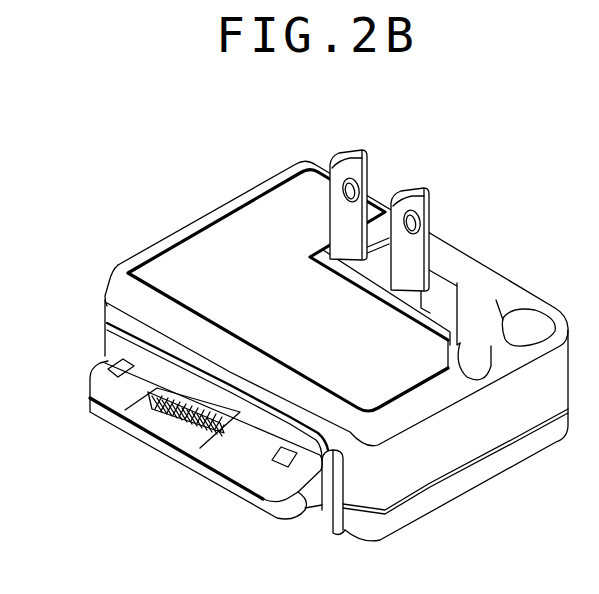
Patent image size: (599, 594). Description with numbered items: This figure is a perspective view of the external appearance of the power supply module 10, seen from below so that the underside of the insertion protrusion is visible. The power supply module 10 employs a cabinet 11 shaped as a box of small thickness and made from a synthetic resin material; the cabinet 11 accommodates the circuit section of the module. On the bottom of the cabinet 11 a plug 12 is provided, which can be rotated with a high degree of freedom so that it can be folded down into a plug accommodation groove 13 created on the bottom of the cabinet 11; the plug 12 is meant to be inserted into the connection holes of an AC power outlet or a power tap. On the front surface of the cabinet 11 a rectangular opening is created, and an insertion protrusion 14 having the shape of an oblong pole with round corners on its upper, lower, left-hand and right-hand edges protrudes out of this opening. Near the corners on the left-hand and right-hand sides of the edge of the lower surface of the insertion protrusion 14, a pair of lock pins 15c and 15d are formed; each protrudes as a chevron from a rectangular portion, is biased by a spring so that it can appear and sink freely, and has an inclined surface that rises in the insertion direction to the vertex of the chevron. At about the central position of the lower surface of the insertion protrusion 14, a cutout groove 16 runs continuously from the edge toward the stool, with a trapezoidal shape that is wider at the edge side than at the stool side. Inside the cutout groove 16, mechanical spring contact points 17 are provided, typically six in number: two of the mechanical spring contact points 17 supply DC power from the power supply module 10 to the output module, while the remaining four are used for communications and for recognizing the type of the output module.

The power supply module 10 is at (172, 116).
The cabinet 11 is at (244, 218).
The plug 12 is at (418, 190).
The plug accommodation groove 13 is at (473, 313).
The insertion protrusion 14 is at (98, 385).
The lock pin 15c is at (284, 460).
The lock pin 15d is at (108, 369).
The cutout groove 16 is at (174, 432).
The mechanical spring contact points 17 is at (143, 413).